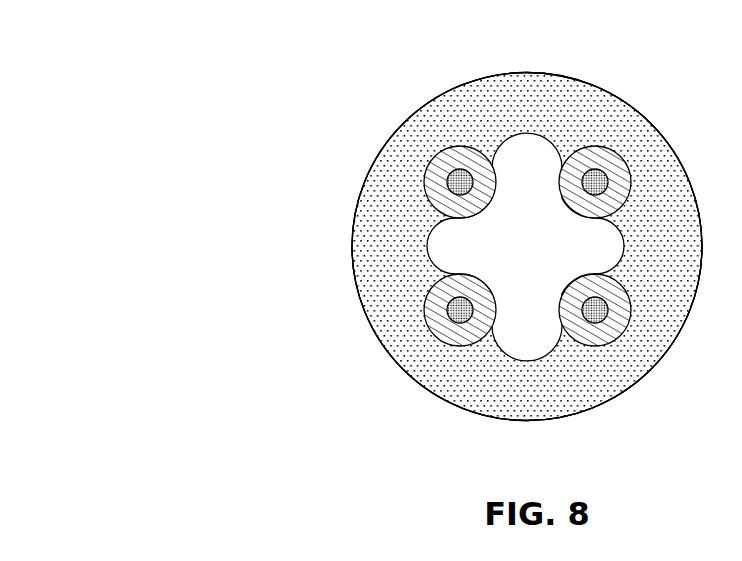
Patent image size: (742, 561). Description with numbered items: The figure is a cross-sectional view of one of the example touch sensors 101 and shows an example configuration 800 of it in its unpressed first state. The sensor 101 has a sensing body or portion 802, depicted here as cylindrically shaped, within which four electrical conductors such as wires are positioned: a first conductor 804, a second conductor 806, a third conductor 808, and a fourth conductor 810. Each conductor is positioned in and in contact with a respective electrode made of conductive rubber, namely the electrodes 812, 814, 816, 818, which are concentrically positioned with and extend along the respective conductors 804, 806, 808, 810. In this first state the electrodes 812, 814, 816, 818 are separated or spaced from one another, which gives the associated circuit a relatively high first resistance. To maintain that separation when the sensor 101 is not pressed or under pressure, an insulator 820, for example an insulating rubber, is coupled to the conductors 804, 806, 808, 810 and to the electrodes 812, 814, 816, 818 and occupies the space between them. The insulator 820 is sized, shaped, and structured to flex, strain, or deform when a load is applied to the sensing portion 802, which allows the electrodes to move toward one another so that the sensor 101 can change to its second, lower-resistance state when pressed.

The example configuration 800 is at (201, 123).
The sensor 101 is at (350, 162).
The sensing body or portion 802 is at (354, 286).
The insulator 820 is at (381, 261).
The first conductor 804 is at (459, 169).
The second conductor 806 is at (598, 170).
The third conductor 808 is at (460, 324).
The fourth conductor 810 is at (595, 324).
The electrode 812 is at (461, 160).
The electrode 814 is at (597, 152).
The electrode 816 is at (459, 346).
The electrode 818 is at (596, 346).